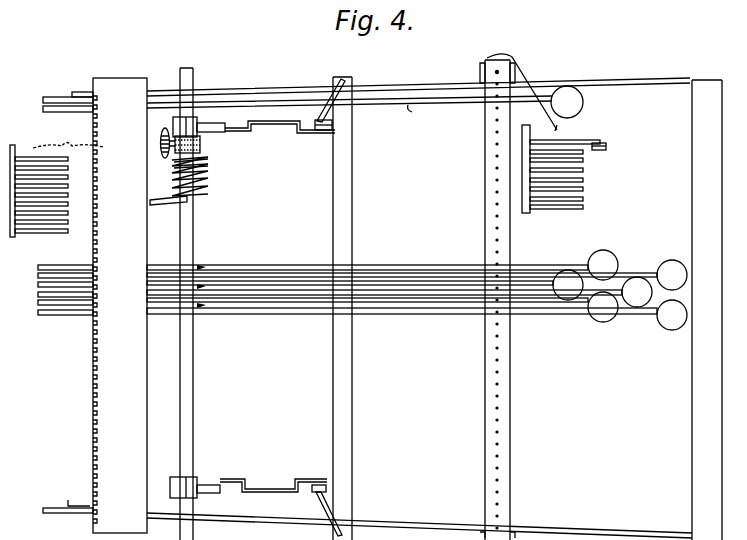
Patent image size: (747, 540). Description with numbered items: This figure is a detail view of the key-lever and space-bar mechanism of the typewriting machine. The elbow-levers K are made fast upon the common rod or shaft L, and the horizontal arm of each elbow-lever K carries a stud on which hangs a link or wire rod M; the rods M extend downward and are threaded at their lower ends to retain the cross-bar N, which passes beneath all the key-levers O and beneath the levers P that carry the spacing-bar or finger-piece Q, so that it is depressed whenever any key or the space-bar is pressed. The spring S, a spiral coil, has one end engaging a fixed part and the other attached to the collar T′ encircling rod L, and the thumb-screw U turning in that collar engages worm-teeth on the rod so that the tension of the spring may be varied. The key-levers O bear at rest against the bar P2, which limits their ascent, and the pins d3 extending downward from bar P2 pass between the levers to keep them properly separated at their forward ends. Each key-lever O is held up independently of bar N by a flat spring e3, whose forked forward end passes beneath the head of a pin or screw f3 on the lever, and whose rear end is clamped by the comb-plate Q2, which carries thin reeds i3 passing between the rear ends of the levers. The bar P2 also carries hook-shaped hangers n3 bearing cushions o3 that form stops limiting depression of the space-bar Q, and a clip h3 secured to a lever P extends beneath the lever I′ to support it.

The comb-plate Q2 is at (120, 295).
The clip h3 is at (82, 92).
The thin flat pins or reeds i3 is at (58, 230).
The rod or shaft L is at (192, 296).
The elbow-lever K is at (213, 122).
The thumb-screw U is at (160, 147).
The collar T′ is at (203, 147).
The spring S is at (204, 183).
The cross-bar N is at (354, 308).
The link or wire rod M is at (335, 110).
The lever P is at (419, 296).
The lever I′ is at (416, 115).
The bar P2 is at (482, 300).
The spacing-bar or finger-piece Q is at (697, 310).
The wires or pins d3 is at (501, 347).
The cushion o3 is at (603, 143).
The hook-shaped hanger n3 is at (574, 129).
The key-lever O is at (417, 286).
The pin or screw f3 is at (205, 266).
The flat spring e3 is at (199, 264).